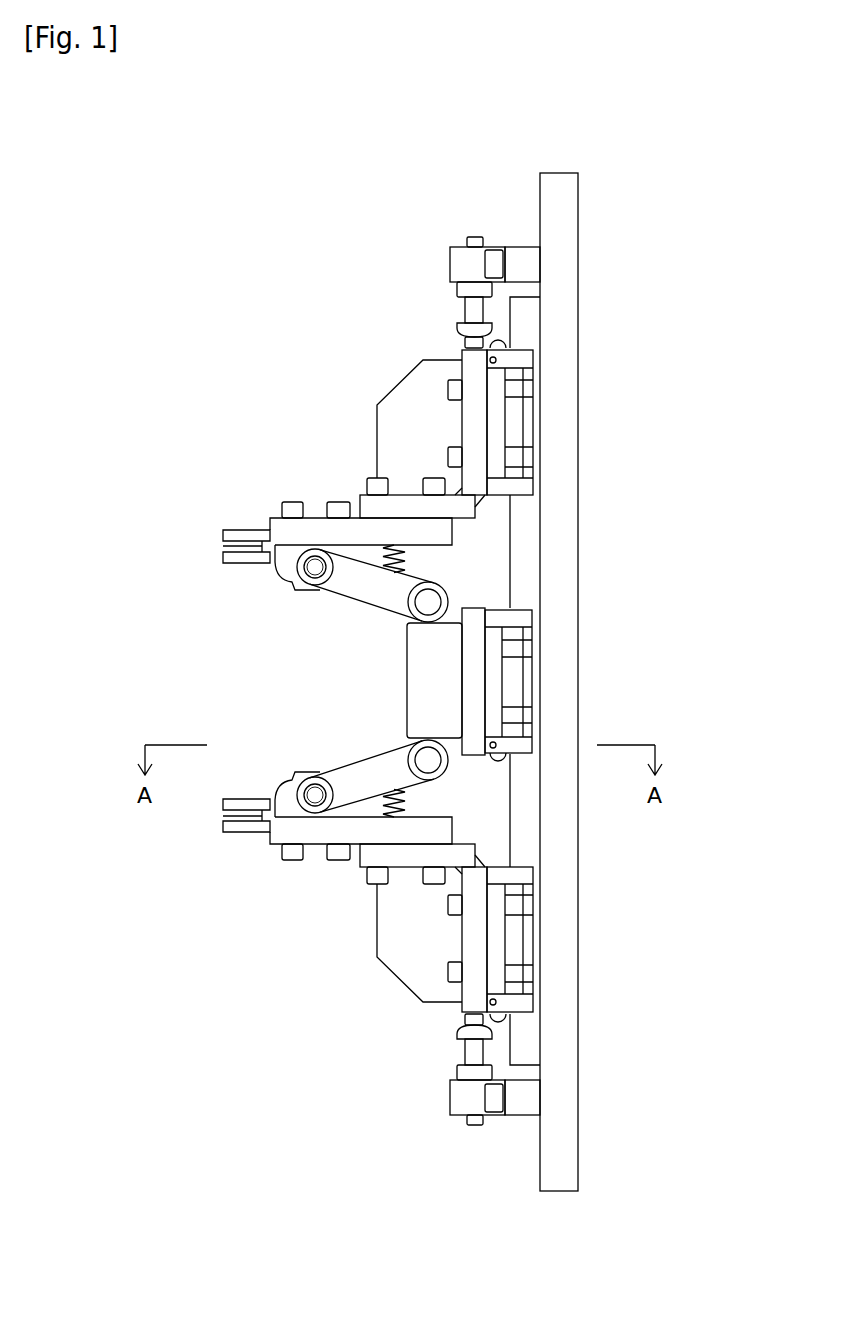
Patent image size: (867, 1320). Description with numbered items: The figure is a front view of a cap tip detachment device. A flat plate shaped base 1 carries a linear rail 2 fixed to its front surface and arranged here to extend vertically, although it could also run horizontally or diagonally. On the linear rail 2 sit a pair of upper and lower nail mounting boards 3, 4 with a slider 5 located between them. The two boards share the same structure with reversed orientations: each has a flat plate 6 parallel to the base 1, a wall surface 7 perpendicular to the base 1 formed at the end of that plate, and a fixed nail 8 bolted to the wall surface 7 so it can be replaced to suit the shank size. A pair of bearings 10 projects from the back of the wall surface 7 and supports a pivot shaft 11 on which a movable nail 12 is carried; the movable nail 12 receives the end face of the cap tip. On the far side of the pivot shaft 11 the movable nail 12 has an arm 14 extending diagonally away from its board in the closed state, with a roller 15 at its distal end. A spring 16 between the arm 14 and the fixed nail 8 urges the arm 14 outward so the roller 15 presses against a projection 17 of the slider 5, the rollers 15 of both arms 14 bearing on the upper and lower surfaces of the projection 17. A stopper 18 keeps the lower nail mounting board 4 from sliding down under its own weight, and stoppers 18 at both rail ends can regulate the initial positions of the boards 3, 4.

The base 1 is at (568, 366).
The linear rail 2 is at (530, 512).
The nail mounting board 3 is at (427, 373).
The nail mounting board 4 is at (403, 985).
The slider 5 is at (473, 647).
The flat plate 6 is at (473, 415).
The wall surface 7 is at (365, 505).
The fixed nail 8 is at (223, 530).
The bearings 10 is at (280, 574).
The pivot shaft 11 is at (318, 572).
The movable nail 12 is at (223, 558).
The arm 14 is at (365, 588).
The roller 15 is at (445, 587).
The spring 16 is at (405, 556).
The projection 17 is at (415, 658).
The stopper 18 is at (475, 307).